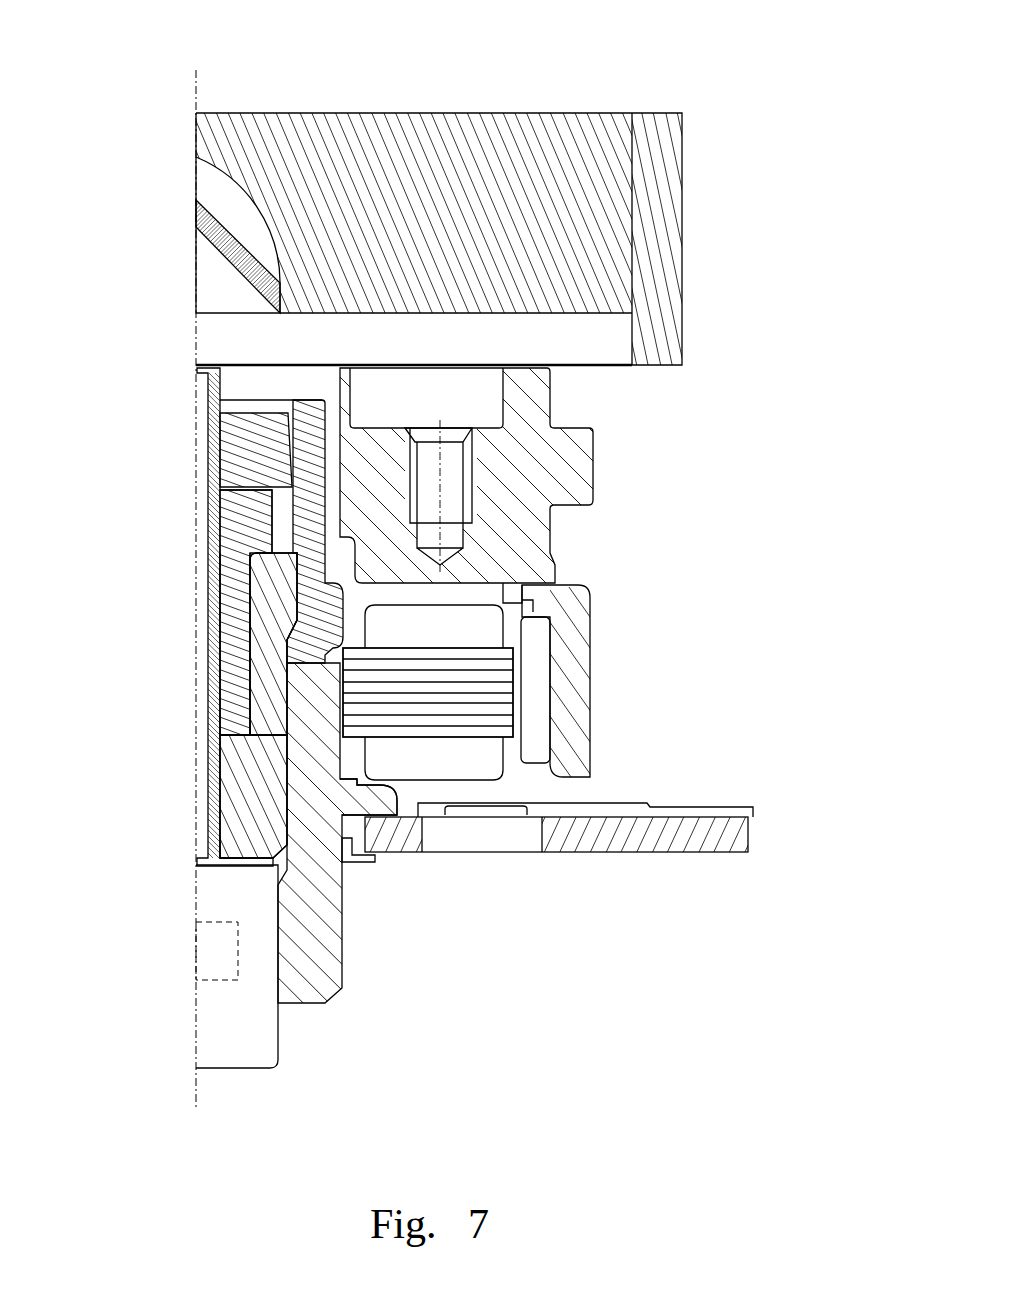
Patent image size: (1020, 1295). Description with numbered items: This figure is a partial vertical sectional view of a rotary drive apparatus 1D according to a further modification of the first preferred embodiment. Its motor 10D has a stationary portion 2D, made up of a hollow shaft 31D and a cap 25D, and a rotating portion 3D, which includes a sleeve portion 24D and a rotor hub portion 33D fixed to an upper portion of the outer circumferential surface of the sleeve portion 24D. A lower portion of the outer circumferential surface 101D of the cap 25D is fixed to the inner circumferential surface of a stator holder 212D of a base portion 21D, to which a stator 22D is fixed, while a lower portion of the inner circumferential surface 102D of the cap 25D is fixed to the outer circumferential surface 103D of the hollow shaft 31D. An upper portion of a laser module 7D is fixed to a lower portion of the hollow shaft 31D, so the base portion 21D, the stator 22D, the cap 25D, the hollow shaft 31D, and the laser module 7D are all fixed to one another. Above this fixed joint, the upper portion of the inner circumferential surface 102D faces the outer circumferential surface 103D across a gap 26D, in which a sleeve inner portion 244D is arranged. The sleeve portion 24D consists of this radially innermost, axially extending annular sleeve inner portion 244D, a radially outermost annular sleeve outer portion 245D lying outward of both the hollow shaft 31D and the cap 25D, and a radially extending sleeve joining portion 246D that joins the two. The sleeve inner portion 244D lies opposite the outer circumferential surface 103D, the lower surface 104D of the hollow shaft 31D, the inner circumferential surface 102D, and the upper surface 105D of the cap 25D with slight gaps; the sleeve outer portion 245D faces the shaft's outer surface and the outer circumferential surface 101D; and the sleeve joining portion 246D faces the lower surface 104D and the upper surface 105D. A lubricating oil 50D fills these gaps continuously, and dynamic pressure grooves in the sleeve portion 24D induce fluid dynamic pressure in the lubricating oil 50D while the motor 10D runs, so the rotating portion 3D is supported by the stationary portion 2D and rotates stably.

The rotary drive apparatus 1D is at (281, 76).
The stationary portion 2D is at (631, 886).
The rotating portion 3D is at (656, 511).
The laser module 7D is at (215, 1107).
The motor 10D is at (625, 623).
The base portion 21D is at (312, 950).
The stator 22D is at (428, 794).
The sleeve portion 24D is at (344, 560).
The cap 25D is at (230, 866).
The gap 26D is at (192, 708).
The hollow shaft 31D is at (212, 418).
The rotor hub portion 33D is at (560, 473).
The lubricating oil 50D is at (370, 790).
The outer circumferential surface of the cap 101D is at (250, 655).
The inner circumferential surface of the cap 102D is at (220, 600).
The outer circumferential surface of the hollow shaft 103D is at (235, 555).
The lower surface of the hollow shaft 104D is at (233, 487).
The upper surface of the cap 105D is at (233, 737).
The stator holder 212D is at (344, 833).
The sleeve inner portion 244D is at (238, 560).
The sleeve outer portion 245D is at (308, 533).
The sleeve joining portion 246D is at (260, 537).